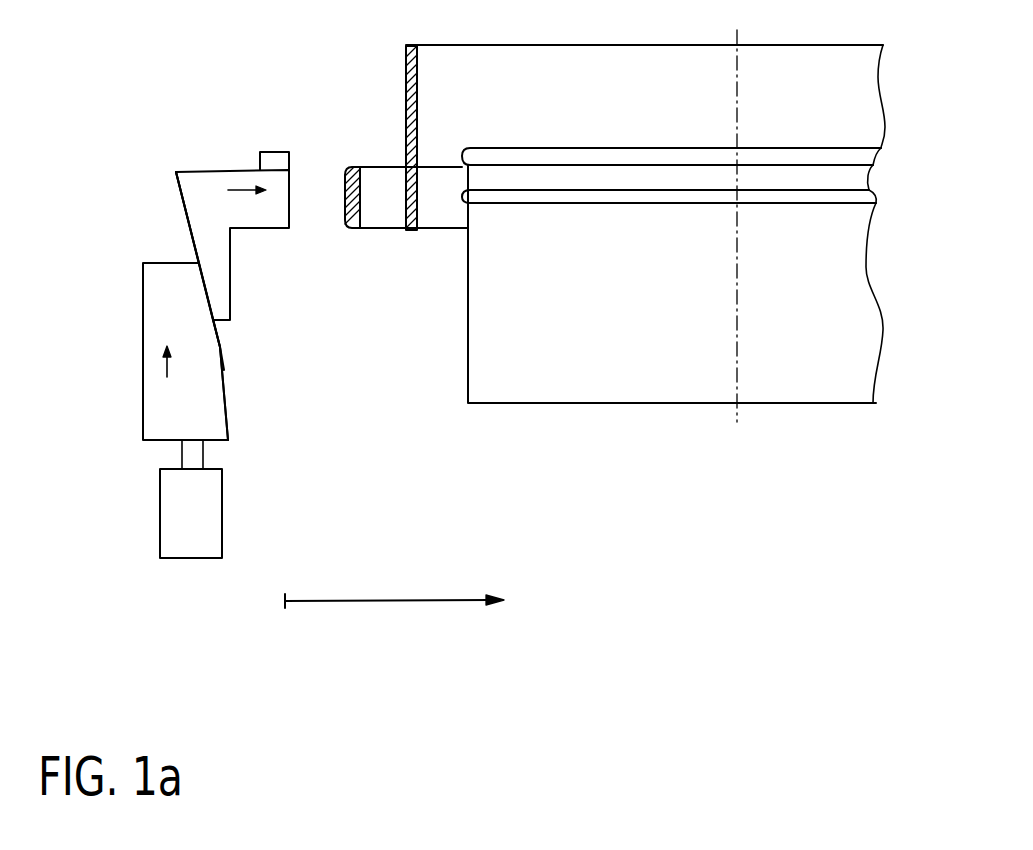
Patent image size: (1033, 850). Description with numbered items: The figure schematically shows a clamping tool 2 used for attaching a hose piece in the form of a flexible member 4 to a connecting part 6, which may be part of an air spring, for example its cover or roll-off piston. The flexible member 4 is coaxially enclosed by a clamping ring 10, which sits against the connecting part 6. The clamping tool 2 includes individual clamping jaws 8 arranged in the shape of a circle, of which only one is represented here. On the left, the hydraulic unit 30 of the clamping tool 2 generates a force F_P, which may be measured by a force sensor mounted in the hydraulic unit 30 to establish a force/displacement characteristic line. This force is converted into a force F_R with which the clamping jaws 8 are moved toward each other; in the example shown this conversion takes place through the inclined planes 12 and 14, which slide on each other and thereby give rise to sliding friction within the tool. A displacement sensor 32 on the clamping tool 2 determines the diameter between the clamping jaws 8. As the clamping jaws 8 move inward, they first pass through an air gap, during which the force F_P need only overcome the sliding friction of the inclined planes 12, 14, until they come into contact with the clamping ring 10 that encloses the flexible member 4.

The clamping tool 2 is at (157, 417).
The flexible member 4 is at (400, 220).
The connecting part 6 is at (559, 365).
The clamping jaws 8 is at (198, 187).
The clamping ring 10 is at (350, 165).
The inclined plane 12 is at (221, 349).
The inclined plane 14 is at (187, 230).
The hydraulic unit 30 is at (193, 533).
The displacement sensor 32 is at (275, 160).